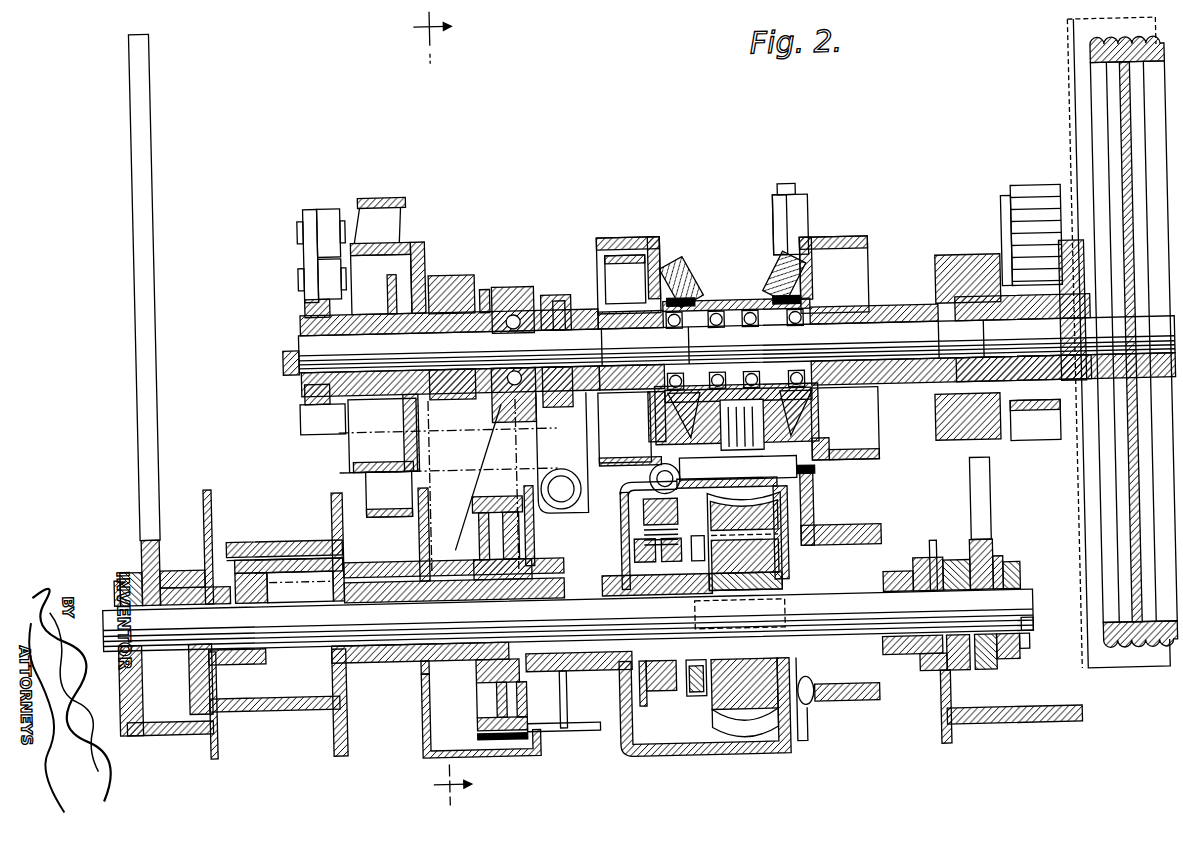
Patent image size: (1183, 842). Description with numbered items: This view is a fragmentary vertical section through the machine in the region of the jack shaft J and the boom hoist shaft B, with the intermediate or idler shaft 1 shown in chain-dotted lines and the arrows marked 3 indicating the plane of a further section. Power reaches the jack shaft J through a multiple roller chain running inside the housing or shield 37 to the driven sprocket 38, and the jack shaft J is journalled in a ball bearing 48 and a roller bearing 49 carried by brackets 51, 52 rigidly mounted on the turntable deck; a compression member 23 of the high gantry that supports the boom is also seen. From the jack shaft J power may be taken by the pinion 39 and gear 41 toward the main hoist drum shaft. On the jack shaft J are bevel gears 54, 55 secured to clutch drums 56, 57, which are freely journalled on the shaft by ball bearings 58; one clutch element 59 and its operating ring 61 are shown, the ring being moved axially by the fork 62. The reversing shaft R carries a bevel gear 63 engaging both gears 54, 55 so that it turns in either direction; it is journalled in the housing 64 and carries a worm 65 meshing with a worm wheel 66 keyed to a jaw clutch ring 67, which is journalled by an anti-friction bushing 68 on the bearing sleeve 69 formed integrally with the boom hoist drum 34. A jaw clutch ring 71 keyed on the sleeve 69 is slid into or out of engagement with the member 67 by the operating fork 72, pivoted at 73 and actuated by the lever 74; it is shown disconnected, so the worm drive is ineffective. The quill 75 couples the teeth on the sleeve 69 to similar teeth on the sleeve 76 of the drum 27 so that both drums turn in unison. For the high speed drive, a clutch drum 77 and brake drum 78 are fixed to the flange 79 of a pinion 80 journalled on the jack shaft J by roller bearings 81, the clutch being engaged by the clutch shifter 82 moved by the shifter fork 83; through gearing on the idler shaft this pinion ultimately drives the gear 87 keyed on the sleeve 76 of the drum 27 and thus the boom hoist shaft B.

The clutch unit 1 is at (458, 432).
The section line 3- 3 is at (436, 408).
The compression member 23 is at (137, 468).
The drum 27 is at (262, 700).
The boom hoist drum 34 is at (842, 706).
The housing or shield 37 is at (1076, 42).
The driven sprocket 38 is at (1100, 66).
The pinion 39 is at (1050, 430).
The gear 41 is at (1010, 200).
The ball bearing 48 is at (510, 300).
The roller bearing 49 is at (968, 305).
The bracket 51 is at (548, 300).
The bracket 52 is at (952, 263).
The bevel gear 54 is at (695, 275).
The bevel gear 55 is at (782, 280).
The clutch drum 56 is at (660, 250).
The clutch drum 57 is at (840, 245).
The ball bearings 58 is at (760, 328).
The clutch element 59 is at (625, 279).
The operating ring 61 is at (562, 300).
The fork 62 is at (565, 466).
The bevel gear 63 is at (790, 436).
The housing 64 is at (786, 470).
The worm 65 is at (780, 614).
The worm wheel 66 is at (722, 735).
The jaw clutch ring 67 is at (695, 698).
The anti-friction bushing 68 is at (795, 670).
The bearing sleeve 69 is at (668, 695).
The jaw clutch ring 71 is at (640, 700).
The operating fork 72 is at (640, 515).
The pivot 73 is at (648, 479).
The lever 74 is at (660, 440).
The quill 75 is at (568, 676).
The sleeve 76 is at (400, 658).
The clutch drum 77 is at (400, 240).
The brake drum 78 is at (383, 193).
The flange 79 is at (428, 262).
The pinion 80 is at (450, 290).
The roller bearings 81 is at (486, 287).
The clutch shifter 82 is at (307, 300).
The shifter fork 83 is at (305, 400).
The gear 87 is at (478, 722).
The jack shaft J is at (728, 344).
The boom hoist shaft B is at (1018, 613).
The reversing shaft R is at (812, 501).